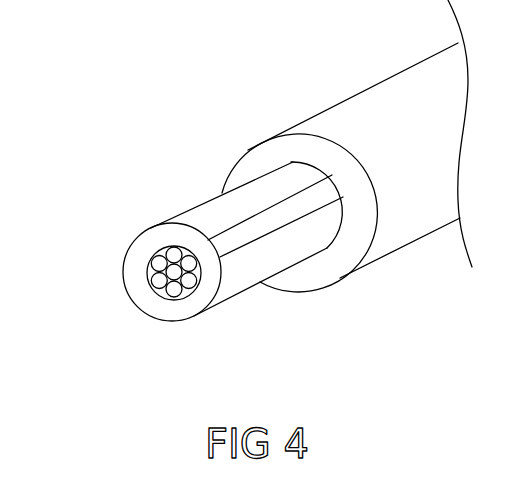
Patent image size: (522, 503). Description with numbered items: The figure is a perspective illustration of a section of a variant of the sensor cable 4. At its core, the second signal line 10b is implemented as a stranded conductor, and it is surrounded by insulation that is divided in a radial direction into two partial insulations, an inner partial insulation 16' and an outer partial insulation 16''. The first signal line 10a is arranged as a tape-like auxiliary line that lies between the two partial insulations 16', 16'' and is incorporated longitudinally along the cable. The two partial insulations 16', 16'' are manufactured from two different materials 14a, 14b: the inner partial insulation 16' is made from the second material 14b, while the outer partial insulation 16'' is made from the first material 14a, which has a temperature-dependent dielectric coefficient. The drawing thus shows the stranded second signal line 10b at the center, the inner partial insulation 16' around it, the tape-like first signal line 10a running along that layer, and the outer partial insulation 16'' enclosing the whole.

The sensor cable 4 is at (76, 148).
The outer partial insulation 16'' is at (347, 146).
The first material 14a is at (347, 146).
The inner partial insulation 16' is at (219, 213).
The second material 14b is at (219, 213).
The second signal line 10b is at (161, 292).
The first signal line 10a is at (236, 250).